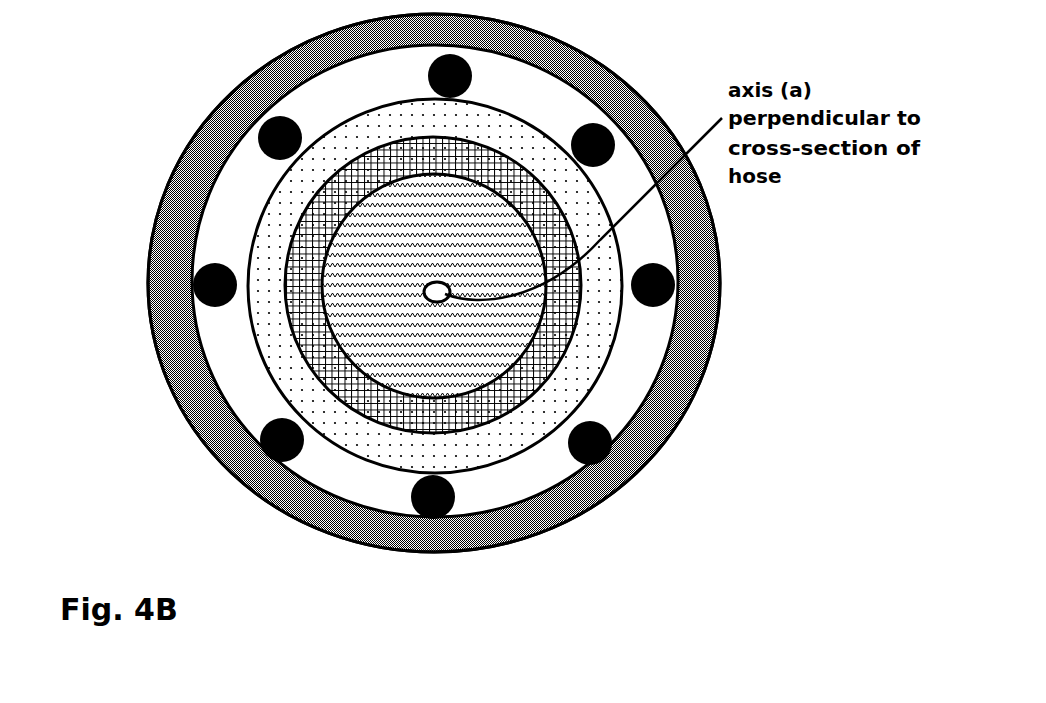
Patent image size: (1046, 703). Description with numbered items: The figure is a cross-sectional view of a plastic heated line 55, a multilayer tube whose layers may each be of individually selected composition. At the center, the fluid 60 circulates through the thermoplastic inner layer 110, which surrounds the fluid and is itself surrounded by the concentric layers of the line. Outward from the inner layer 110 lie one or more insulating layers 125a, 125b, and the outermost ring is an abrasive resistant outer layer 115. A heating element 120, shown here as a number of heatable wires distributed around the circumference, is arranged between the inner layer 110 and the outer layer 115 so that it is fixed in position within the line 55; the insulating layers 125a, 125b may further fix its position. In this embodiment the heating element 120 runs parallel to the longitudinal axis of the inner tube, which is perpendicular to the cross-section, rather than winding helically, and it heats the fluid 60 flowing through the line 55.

The plastic heated line 55 is at (613, 526).
The fluid 60 is at (346, 270).
The thermoplastic inner layer 110 is at (565, 300).
The abrasive resistant outer layer 115 is at (568, 68).
The heating element 120 is at (283, 418).
The insulating layer 125a is at (622, 402).
The insulating layer 125b is at (378, 443).